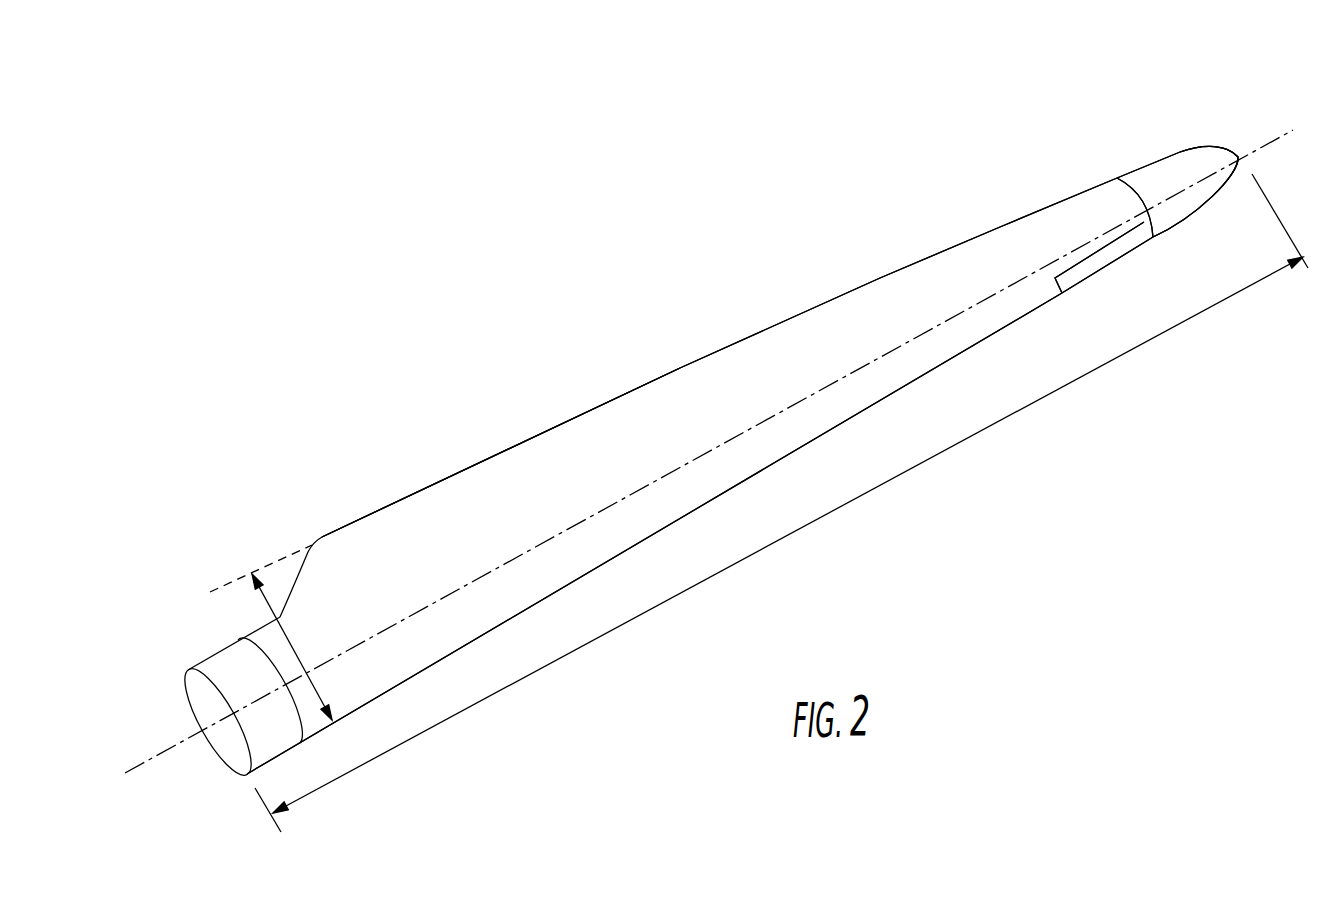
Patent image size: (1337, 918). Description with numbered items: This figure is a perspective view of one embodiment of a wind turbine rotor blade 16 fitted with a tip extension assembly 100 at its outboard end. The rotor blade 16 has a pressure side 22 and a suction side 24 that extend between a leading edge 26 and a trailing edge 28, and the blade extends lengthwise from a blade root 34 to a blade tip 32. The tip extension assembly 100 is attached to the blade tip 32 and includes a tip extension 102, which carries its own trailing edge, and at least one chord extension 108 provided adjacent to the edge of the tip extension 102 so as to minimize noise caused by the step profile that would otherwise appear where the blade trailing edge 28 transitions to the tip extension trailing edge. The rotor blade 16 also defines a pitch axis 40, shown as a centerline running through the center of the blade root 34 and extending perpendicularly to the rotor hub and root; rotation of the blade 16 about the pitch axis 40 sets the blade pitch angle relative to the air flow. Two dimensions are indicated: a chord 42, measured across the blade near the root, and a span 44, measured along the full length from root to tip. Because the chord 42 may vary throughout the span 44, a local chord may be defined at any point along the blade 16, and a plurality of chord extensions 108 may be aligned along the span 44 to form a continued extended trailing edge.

The rotor blade 16 is at (503, 432).
The pressure side 22 is at (718, 373).
The suction side 24 is at (428, 522).
The leading edge 26 is at (445, 661).
The trailing edge 28 is at (333, 538).
The blade tip 32 is at (1238, 157).
The blade root 34 is at (270, 733).
The pitch axis 40 is at (557, 537).
The chord 42 is at (287, 640).
The span 44 is at (827, 514).
The tip extension assembly 100 is at (1095, 170).
The tip extension 102 is at (1152, 163).
The chord extension 108 is at (1090, 273).